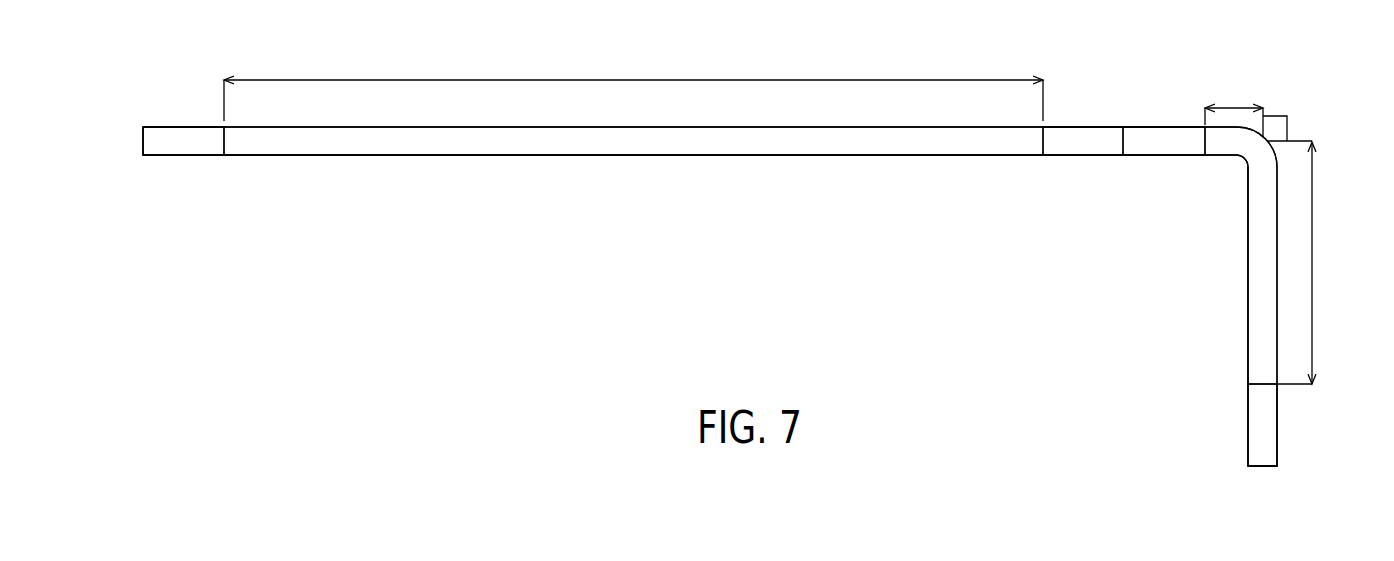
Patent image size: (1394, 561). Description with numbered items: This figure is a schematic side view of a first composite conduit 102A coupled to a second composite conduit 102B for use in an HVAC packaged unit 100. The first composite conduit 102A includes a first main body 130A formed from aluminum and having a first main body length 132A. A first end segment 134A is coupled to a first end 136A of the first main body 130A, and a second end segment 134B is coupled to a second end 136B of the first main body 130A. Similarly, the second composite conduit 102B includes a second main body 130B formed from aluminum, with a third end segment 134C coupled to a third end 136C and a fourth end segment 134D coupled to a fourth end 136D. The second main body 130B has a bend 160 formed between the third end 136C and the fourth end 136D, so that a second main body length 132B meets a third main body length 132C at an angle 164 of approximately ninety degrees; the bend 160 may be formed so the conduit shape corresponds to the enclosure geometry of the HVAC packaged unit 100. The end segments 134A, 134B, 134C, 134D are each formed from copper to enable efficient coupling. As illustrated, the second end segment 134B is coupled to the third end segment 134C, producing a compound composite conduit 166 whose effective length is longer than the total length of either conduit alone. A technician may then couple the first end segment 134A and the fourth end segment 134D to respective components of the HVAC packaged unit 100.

The HVAC packaged unit 100 is at (637, 337).
The first composite conduit 102A is at (527, 184).
The second composite conduit 102B is at (1195, 285).
The first main body 130A is at (636, 158).
The second main body 130B is at (1245, 310).
The first main body length 132A is at (633, 80).
The second main body length 132B is at (1236, 107).
The third main body length 132C is at (1312, 262).
The first end segment 134A is at (186, 158).
The second end segment 134B is at (1085, 125).
The third end segment 134C is at (1165, 125).
The fourth end segment 134D is at (1245, 423).
The first end 136A is at (224, 157).
The second end 136B is at (1043, 157).
The third end 136C is at (1205, 157).
The fourth end 136D is at (1248, 384).
The bend 160 is at (1240, 165).
The angle 164 is at (1290, 131).
The compound composite conduit 166 is at (727, 275).